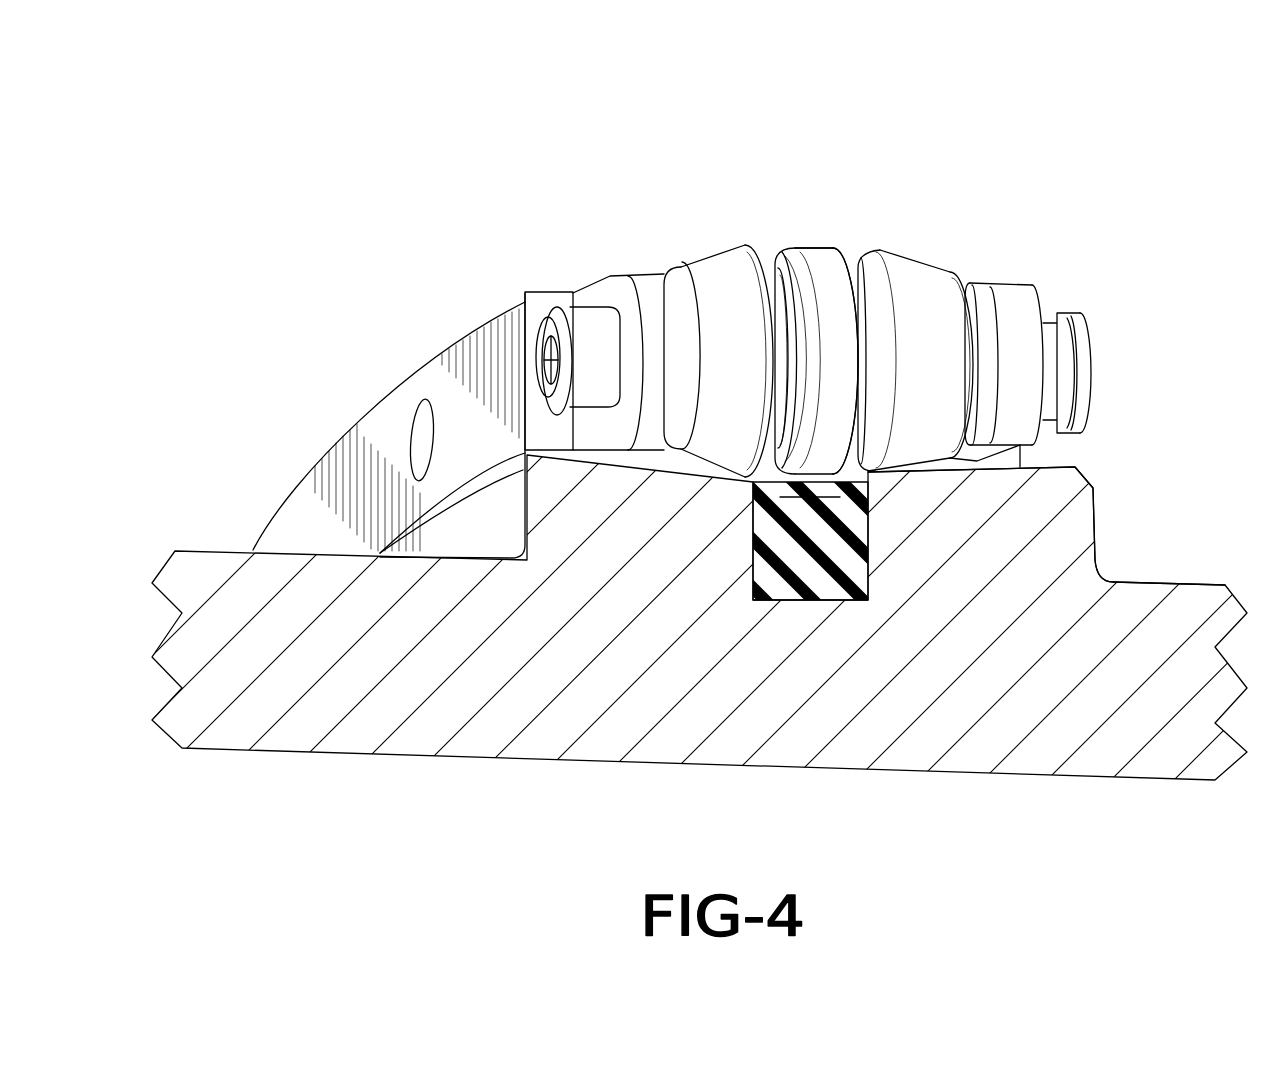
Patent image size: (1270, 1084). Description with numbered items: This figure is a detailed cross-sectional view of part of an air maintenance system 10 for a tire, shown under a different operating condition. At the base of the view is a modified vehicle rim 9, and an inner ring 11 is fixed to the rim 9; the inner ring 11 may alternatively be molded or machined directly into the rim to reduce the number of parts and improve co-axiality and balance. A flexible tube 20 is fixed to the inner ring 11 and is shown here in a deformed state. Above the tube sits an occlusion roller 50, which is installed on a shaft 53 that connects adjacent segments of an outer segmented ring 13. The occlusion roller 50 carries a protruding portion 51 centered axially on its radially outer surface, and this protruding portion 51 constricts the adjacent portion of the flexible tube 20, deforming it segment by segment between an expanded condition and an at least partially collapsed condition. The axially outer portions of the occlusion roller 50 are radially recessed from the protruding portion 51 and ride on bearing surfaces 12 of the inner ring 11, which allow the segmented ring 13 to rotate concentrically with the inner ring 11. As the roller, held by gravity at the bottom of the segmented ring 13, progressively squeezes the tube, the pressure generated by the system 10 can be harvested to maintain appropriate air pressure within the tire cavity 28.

The vehicle rim 9 is at (417, 747).
The air maintenance system 10 is at (262, 192).
The inner ring 11 is at (1101, 520).
The bearing surfaces 12 is at (725, 456).
The segmented ring 13 is at (373, 406).
The flexible tube 20 is at (794, 606).
The tire cavity 28 is at (754, 147).
The occlusion roller 50 is at (851, 249).
The protruding portion 51 is at (833, 286).
The shaft 53 is at (540, 352).